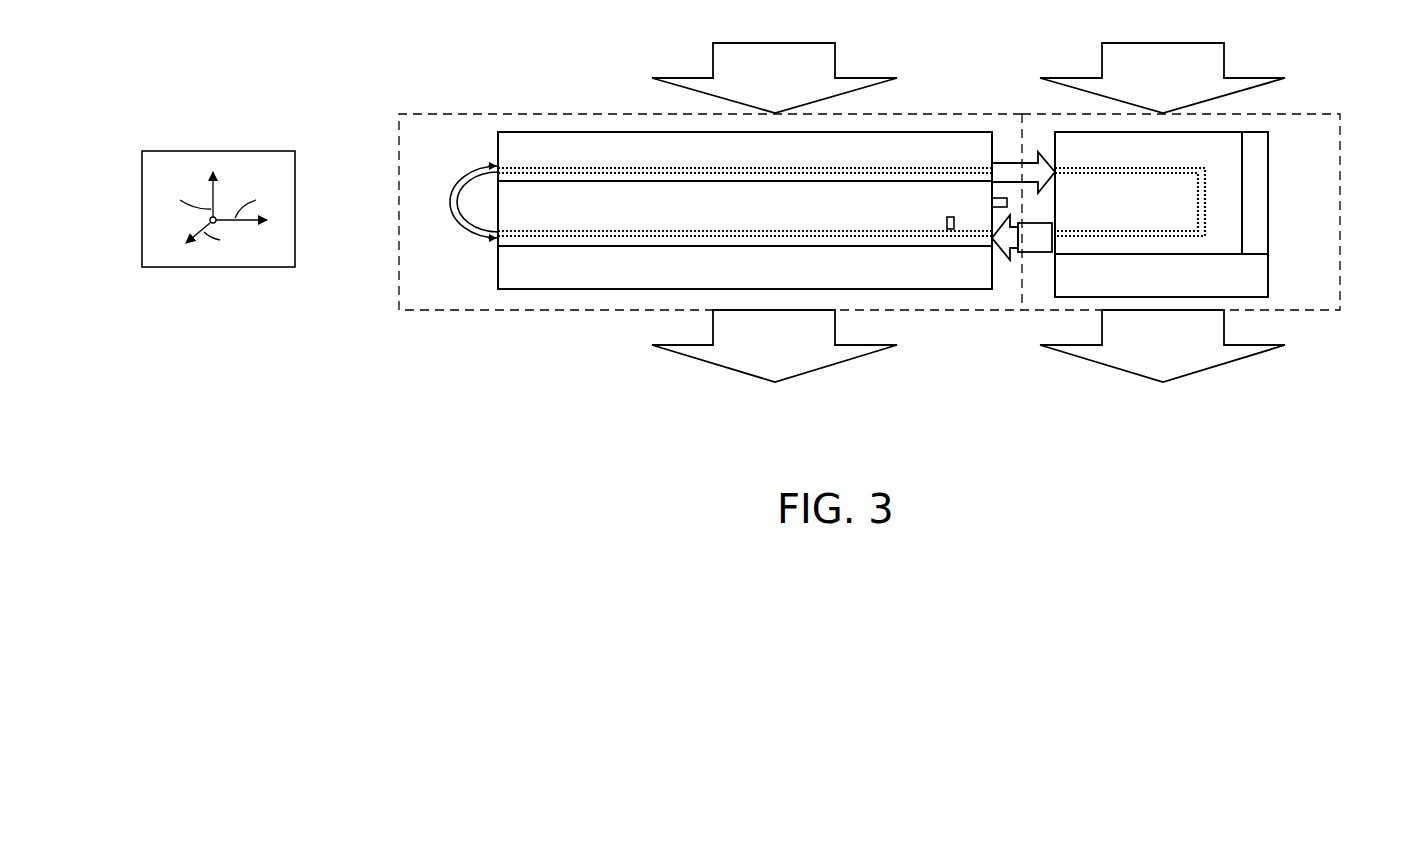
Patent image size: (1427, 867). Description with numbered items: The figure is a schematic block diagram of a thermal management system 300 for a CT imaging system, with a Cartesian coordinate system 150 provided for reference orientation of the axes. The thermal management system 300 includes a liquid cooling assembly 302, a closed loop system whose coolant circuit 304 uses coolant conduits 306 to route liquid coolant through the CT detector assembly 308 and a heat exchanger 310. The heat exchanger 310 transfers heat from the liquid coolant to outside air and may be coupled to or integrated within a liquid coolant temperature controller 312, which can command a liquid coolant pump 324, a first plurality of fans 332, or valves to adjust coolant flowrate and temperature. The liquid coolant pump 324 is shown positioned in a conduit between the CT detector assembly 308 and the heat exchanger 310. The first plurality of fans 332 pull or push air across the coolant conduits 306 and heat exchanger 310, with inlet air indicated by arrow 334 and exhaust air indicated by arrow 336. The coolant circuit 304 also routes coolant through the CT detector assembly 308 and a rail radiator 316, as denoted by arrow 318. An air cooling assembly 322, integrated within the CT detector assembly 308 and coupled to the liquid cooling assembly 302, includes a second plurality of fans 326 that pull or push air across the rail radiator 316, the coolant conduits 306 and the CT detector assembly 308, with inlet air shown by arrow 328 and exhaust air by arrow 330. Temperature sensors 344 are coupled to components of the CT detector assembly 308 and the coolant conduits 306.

The Cartesian coordinate system 150 is at (186, 150).
The thermal management system 300 is at (366, 50).
The liquid cooling assembly 302 is at (1344, 158).
The coolant circuit 304 is at (470, 246).
The coolant conduits 306 is at (542, 165).
The CT detector assembly 308 is at (790, 221).
The heat exchanger 310 is at (1142, 164).
The liquid coolant temperature controller 312 is at (1242, 163).
The rail radiator 316 is at (790, 163).
The arrow 318 is at (470, 165).
The air cooling assembly 322 is at (565, 113).
The liquid coolant pump 324 is at (1037, 255).
The second plurality of fans 326 is at (790, 281).
The arrow 328 is at (713, 60).
The arrow 330 is at (710, 362).
The first plurality of fans 332 is at (1183, 288).
The arrow 334 is at (1102, 60).
The arrow 336 is at (1105, 362).
The temperature sensors 344 is at (950, 217).